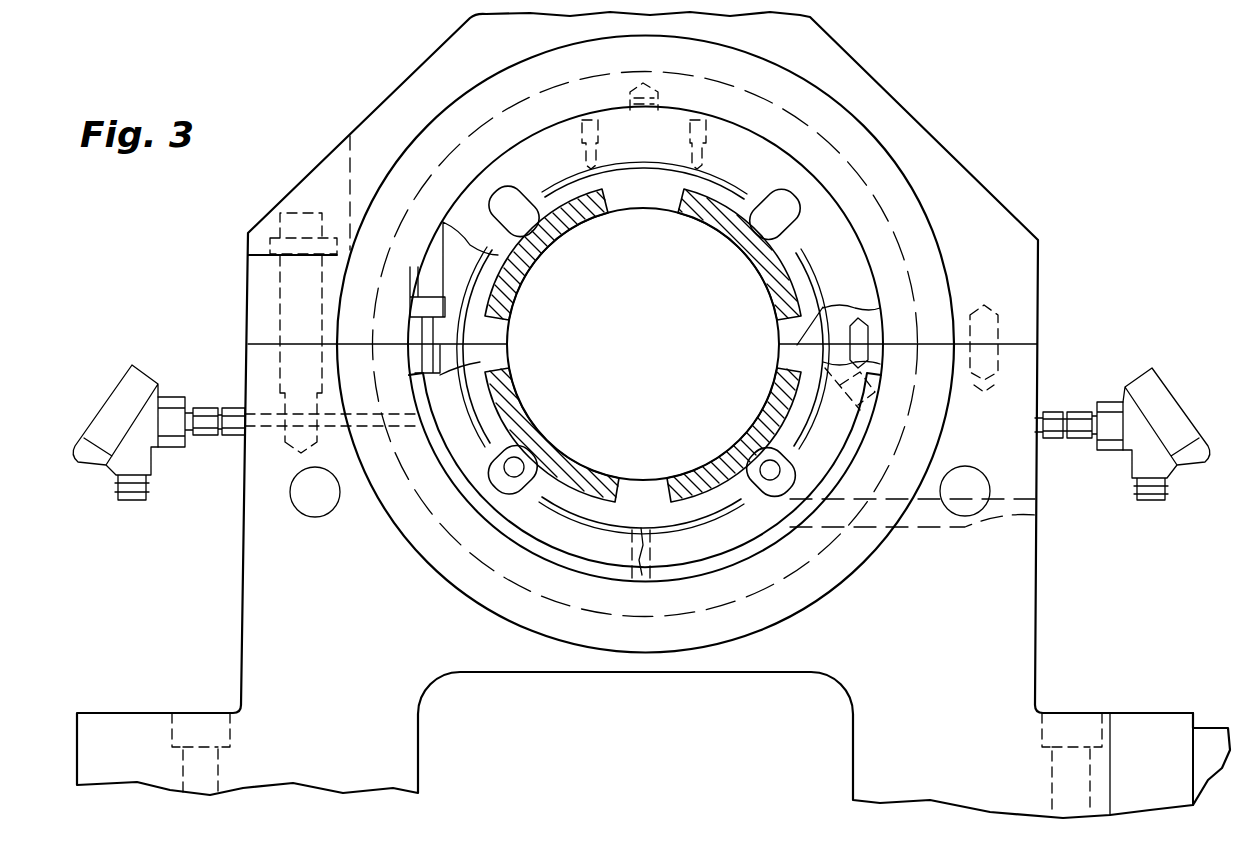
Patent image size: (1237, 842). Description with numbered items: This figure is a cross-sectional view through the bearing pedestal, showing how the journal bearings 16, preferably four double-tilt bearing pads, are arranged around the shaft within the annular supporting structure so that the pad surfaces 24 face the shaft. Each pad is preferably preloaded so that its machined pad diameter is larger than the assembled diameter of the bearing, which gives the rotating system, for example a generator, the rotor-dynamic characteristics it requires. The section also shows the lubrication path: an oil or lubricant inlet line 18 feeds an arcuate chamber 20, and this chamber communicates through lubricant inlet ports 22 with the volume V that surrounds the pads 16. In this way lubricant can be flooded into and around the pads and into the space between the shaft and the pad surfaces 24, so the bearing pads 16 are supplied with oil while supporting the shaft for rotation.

The journal bearings 16 is at (775, 412).
The lubricant inlet line 18 is at (1030, 516).
The arcuate chamber 20 is at (748, 548).
The lubricant inlet ports 22 is at (641, 528).
The pad surfaces 24 is at (735, 242).
The volume V is at (827, 300).